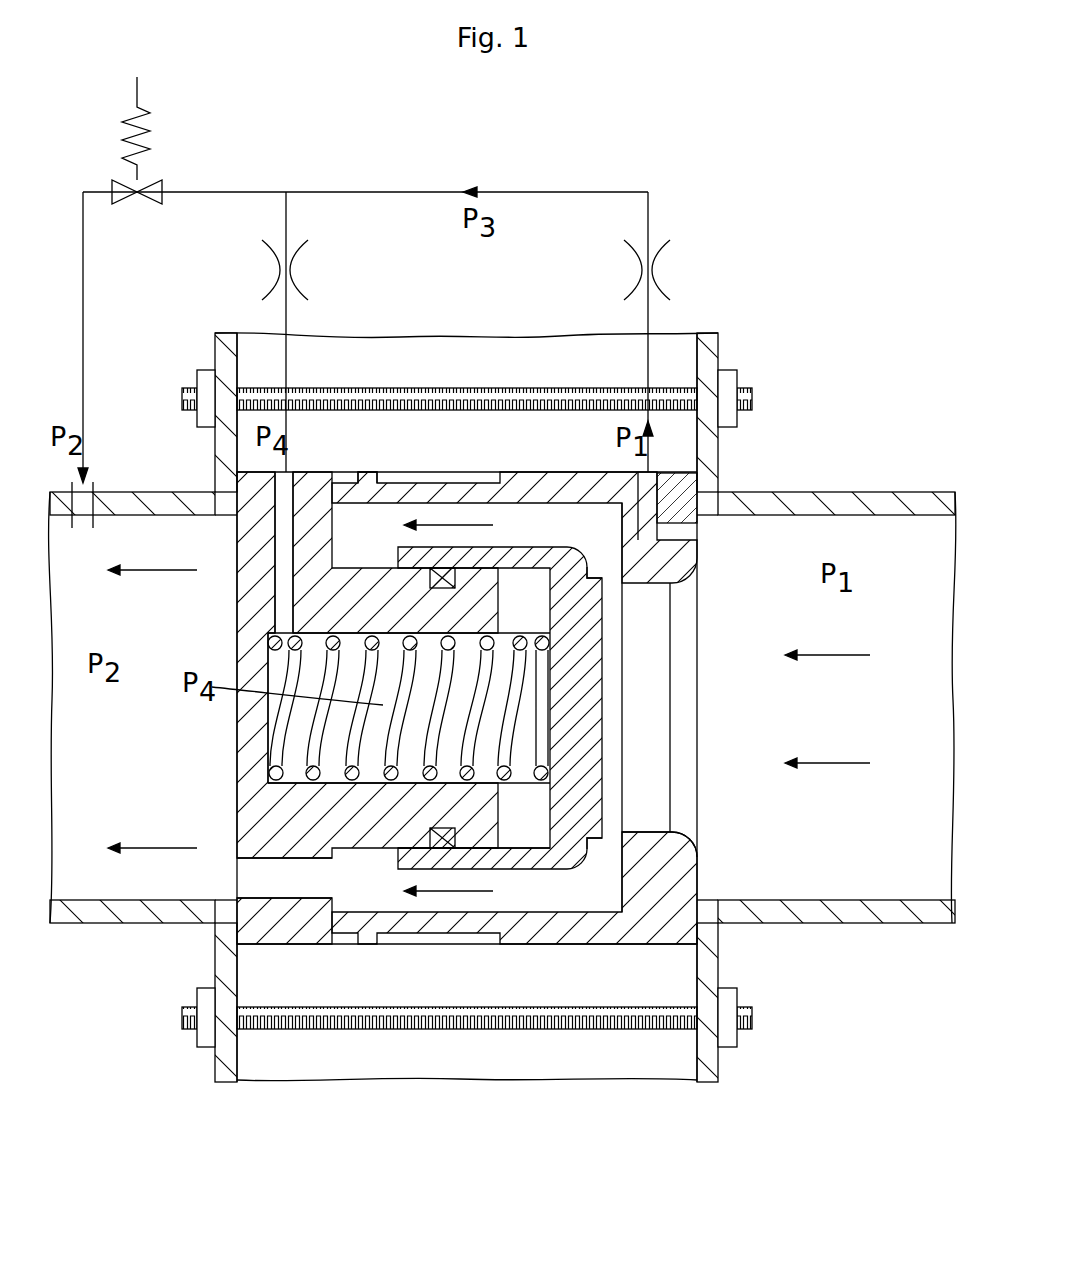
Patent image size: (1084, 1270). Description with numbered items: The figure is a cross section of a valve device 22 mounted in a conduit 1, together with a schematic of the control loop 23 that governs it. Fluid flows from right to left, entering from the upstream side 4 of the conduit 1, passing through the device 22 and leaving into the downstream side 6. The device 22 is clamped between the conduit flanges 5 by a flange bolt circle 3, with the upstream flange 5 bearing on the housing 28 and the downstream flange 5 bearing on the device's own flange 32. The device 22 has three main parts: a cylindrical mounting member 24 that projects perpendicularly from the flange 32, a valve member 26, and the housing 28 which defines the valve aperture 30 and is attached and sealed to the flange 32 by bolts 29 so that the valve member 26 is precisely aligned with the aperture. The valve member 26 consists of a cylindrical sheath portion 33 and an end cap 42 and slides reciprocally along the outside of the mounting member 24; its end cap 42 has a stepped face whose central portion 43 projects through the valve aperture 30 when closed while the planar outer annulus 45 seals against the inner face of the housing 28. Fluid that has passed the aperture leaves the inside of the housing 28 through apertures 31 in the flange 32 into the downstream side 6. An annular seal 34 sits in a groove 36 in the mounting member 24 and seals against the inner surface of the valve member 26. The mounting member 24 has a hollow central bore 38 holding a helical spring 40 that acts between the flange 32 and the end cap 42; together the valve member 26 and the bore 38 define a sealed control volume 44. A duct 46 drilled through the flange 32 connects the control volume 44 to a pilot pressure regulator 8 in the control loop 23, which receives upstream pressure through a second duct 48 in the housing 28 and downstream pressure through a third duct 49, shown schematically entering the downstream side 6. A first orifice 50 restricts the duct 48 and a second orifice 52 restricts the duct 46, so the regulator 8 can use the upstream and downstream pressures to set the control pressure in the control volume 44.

The conduit 1 is at (860, 498).
The flange bolt circle 3 is at (548, 388).
The upstream side 4 is at (827, 718).
The flange 5 is at (722, 350).
The downstream side 6 is at (119, 713).
The pilot pressure regulator 8 is at (162, 182).
The device 22 is at (765, 972).
The control loop 23 is at (403, 192).
The cylindrical mounting member 24 is at (353, 577).
The valve member 26 is at (550, 855).
The housing 28 is at (643, 923).
The bolts 29 is at (371, 478).
The valve aperture 30 is at (658, 687).
The apertures 31 is at (268, 884).
The flange 32 is at (250, 930).
The cylindrical sheath portion 33 is at (468, 863).
The annular seal 34 is at (447, 572).
The groove 36 is at (430, 840).
The hollow central bore 38 is at (335, 747).
The helical spring 40 is at (283, 728).
The end cap 42 is at (597, 657).
The central portion 43 is at (592, 770).
The control volume 44 is at (307, 672).
The planar outer annulus 45 is at (590, 843).
The duct 46 is at (280, 498).
The second duct 48 is at (650, 493).
The third duct 49 is at (92, 487).
The first orifice 50 is at (653, 273).
The second orifice 52 is at (275, 262).